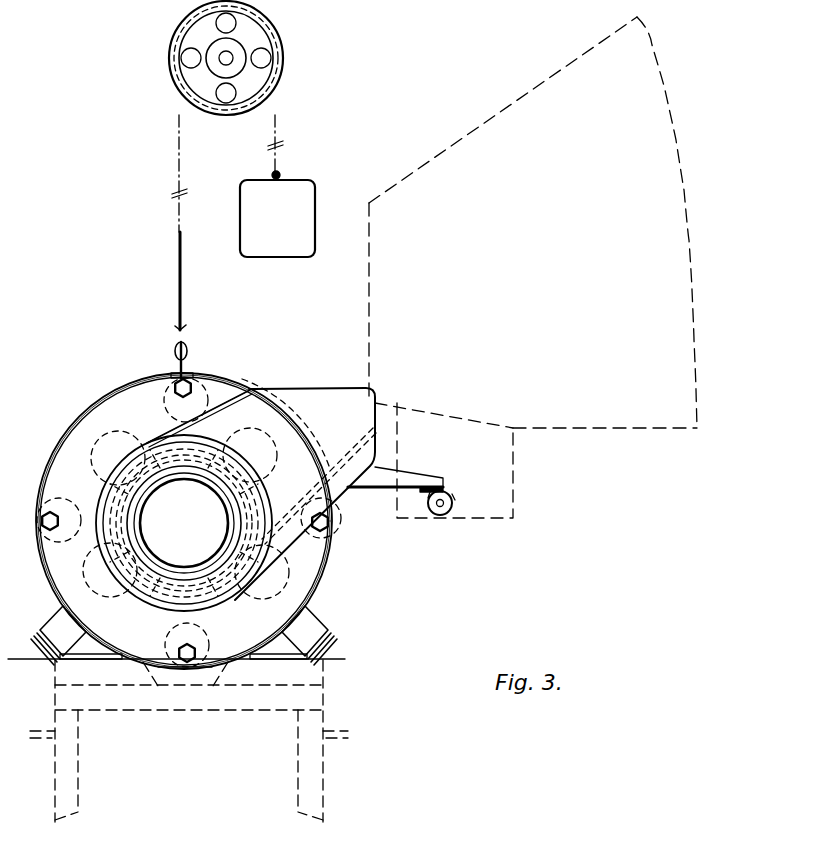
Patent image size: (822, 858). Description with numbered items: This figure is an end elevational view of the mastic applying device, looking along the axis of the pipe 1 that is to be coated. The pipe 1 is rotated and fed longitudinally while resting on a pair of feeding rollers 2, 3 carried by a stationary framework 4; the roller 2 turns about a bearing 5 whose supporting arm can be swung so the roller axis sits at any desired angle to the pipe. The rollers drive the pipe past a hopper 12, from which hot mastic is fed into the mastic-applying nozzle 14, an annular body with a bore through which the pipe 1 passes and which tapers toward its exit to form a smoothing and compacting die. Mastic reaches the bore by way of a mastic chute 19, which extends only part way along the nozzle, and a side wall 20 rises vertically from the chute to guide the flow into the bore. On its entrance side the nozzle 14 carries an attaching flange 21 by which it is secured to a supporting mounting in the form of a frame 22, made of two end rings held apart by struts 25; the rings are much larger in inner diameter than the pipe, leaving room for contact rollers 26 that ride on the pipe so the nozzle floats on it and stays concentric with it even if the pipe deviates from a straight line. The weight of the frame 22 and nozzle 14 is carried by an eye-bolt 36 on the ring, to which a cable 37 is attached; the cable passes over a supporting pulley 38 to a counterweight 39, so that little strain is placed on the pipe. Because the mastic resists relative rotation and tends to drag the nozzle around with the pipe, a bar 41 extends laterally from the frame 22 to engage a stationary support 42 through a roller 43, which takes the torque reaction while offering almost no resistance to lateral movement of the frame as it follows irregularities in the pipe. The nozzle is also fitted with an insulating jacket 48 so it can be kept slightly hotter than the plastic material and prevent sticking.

The pipe 1 is at (227, 504).
The feeding roller 2 is at (90, 575).
The feeding roller 3 is at (292, 568).
The stationary framework 4 is at (197, 712).
The bearing 5 is at (55, 612).
The hopper 12 is at (652, 415).
The mastic-applying nozzle 14 is at (182, 448).
The mastic chute 19 is at (330, 497).
The side wall 20 is at (320, 388).
The attaching flange 21 is at (102, 411).
The frame 22 is at (124, 384).
The struts 25 is at (50, 498).
The contact rollers 26 is at (95, 445).
The eye-bolt 36 is at (188, 366).
The cable 37 is at (182, 283).
The supporting pulley 38 is at (283, 58).
The counterweight 39 is at (298, 190).
The bar 41 is at (414, 481).
The stationary support 42 is at (492, 523).
The roller 43 is at (453, 502).
The insulating jacket 48 is at (222, 626).